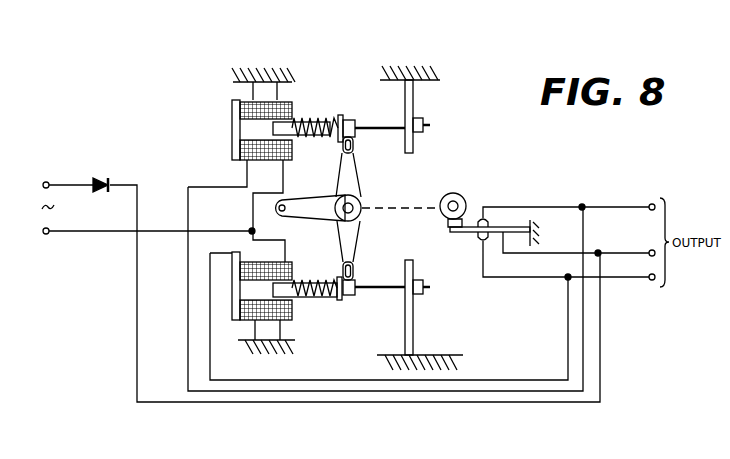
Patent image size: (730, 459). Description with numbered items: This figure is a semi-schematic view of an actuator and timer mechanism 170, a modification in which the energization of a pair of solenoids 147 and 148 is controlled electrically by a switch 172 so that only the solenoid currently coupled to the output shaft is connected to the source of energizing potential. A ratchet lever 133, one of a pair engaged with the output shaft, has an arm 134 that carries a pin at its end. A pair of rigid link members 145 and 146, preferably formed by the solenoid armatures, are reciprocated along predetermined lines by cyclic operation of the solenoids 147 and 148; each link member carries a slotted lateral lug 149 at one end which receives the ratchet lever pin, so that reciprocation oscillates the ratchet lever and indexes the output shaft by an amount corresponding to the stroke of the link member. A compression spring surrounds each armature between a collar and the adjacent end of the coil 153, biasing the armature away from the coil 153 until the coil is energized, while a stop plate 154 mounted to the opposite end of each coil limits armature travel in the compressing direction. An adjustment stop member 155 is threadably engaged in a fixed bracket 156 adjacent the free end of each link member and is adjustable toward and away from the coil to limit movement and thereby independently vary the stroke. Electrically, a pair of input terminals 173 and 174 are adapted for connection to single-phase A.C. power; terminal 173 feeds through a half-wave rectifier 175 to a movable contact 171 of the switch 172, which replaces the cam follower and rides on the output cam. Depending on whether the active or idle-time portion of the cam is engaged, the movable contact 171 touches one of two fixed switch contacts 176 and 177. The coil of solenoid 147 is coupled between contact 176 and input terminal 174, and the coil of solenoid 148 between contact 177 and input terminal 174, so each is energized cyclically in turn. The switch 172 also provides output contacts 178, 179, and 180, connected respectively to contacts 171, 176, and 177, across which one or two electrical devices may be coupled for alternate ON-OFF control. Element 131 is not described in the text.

The roller cam follower 131 is at (435, 192).
The ratchet lever 133 is at (336, 193).
The arm 134 is at (360, 237).
The rigid link member 145 is at (387, 217).
The rigid link member 146 is at (346, 118).
The solenoid 147 is at (298, 325).
The solenoid 148 is at (229, 111).
The lateral lug 149 is at (342, 148).
The coil 153 is at (316, 114).
The stop plate 154 is at (232, 141).
The adjustment stop member 155 is at (378, 131).
The fixed bracket 156 is at (414, 142).
The actuator and timer mechanism 170 is at (518, 158).
The movable contact 171 is at (462, 232).
The switch 172 is at (511, 287).
The input terminal 173 is at (46, 182).
The input terminal 174 is at (47, 236).
The half-wave rectifier 175 is at (100, 178).
The fixed switch contact 176 is at (483, 245).
The fixed switch contact 177 is at (486, 214).
The output contact 178 is at (652, 250).
The output contact 179 is at (650, 280).
The output contact 180 is at (653, 204).